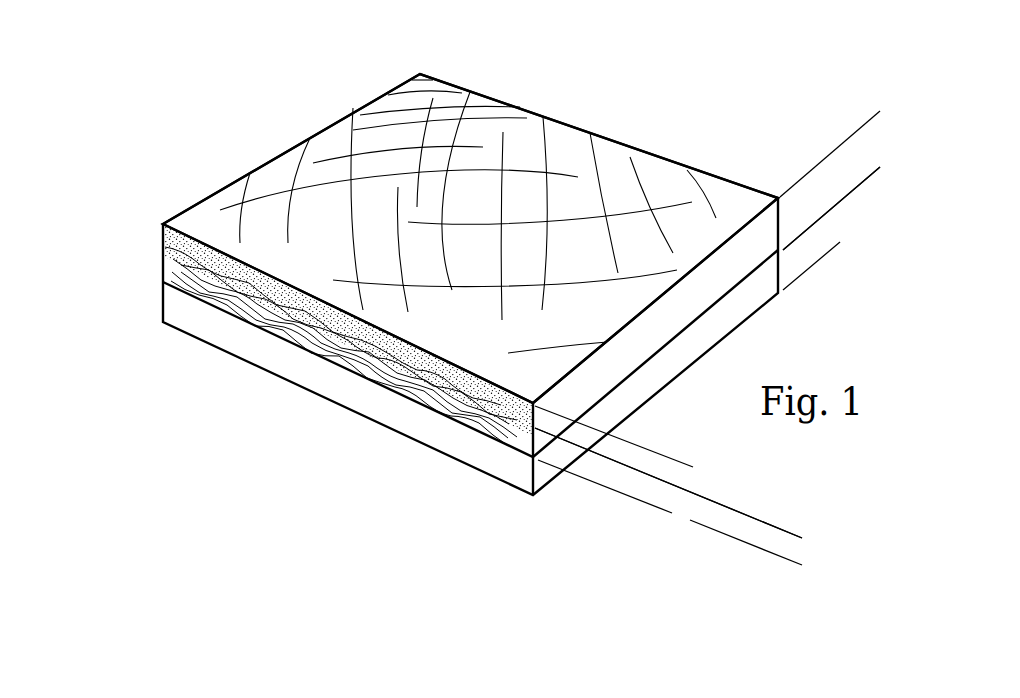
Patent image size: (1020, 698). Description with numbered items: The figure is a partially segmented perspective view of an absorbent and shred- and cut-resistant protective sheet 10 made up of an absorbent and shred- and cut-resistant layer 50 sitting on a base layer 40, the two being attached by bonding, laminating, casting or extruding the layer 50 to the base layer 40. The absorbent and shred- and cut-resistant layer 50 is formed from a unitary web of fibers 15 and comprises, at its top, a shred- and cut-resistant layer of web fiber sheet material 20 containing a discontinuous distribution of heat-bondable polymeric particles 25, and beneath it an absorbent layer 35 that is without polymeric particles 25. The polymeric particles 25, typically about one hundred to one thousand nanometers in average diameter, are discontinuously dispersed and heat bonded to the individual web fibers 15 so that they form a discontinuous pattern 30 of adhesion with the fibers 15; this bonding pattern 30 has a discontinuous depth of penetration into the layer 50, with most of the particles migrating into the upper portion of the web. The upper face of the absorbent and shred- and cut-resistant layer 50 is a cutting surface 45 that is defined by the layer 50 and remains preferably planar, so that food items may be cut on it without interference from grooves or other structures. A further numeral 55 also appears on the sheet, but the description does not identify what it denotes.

The protective sheet 10 is at (690, 121).
The web fibers 15 is at (584, 258).
The shred- and cut-resistant layer of web fiber sheet material 20 is at (680, 573).
The heat-bondable polymeric particles 25 is at (163, 232).
The discontinuous pattern of adhesion 30 is at (241, 300).
The absorbent layer 35 is at (794, 447).
The base layer 40 is at (818, 343).
The cutting surface 45 is at (309, 202).
The absorbent and shred- and cut-resistant layer 50 is at (870, 273).
The bottom layer 55 is at (350, 693).